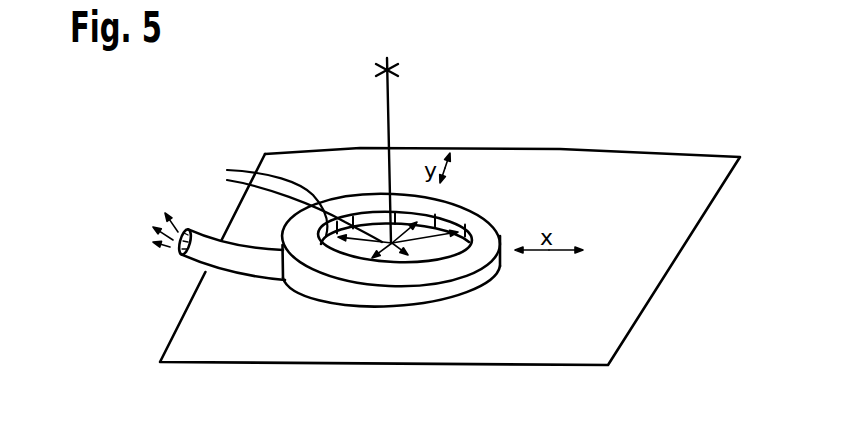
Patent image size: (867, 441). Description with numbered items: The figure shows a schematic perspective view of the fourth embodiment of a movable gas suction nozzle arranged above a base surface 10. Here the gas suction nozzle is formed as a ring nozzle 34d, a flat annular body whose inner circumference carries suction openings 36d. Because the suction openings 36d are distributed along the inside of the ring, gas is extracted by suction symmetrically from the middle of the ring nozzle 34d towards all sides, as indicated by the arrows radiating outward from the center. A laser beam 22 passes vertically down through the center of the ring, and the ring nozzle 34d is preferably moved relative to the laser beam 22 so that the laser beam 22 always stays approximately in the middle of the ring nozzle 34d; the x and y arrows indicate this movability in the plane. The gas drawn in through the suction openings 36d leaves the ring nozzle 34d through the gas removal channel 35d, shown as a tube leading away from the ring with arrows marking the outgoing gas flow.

The substrate / base plate 10 is at (639, 187).
The laser beam 22 is at (388, 100).
The ring nozzle 34d is at (390, 295).
The gas removal channel 35d is at (215, 270).
The suction openings 36d is at (283, 202).